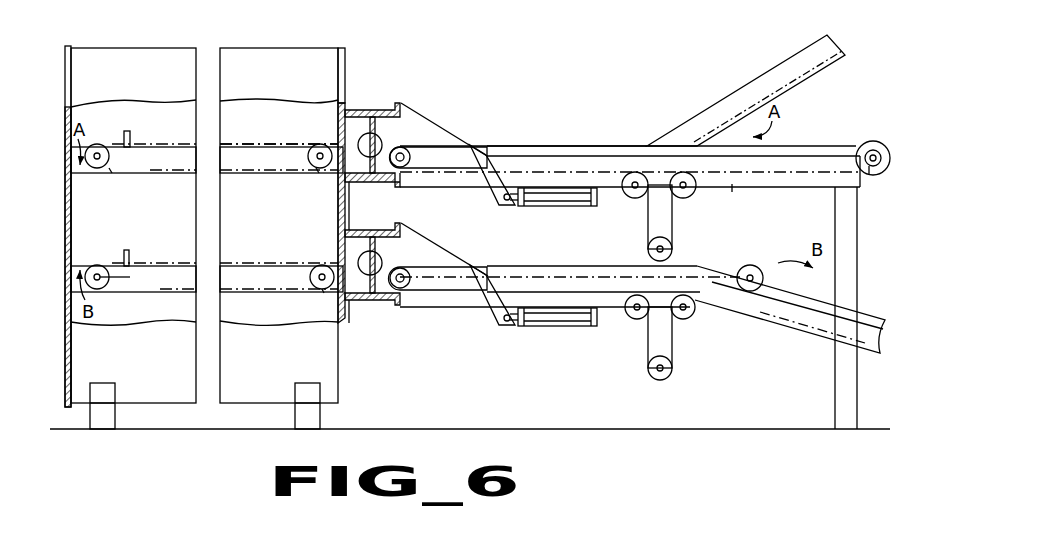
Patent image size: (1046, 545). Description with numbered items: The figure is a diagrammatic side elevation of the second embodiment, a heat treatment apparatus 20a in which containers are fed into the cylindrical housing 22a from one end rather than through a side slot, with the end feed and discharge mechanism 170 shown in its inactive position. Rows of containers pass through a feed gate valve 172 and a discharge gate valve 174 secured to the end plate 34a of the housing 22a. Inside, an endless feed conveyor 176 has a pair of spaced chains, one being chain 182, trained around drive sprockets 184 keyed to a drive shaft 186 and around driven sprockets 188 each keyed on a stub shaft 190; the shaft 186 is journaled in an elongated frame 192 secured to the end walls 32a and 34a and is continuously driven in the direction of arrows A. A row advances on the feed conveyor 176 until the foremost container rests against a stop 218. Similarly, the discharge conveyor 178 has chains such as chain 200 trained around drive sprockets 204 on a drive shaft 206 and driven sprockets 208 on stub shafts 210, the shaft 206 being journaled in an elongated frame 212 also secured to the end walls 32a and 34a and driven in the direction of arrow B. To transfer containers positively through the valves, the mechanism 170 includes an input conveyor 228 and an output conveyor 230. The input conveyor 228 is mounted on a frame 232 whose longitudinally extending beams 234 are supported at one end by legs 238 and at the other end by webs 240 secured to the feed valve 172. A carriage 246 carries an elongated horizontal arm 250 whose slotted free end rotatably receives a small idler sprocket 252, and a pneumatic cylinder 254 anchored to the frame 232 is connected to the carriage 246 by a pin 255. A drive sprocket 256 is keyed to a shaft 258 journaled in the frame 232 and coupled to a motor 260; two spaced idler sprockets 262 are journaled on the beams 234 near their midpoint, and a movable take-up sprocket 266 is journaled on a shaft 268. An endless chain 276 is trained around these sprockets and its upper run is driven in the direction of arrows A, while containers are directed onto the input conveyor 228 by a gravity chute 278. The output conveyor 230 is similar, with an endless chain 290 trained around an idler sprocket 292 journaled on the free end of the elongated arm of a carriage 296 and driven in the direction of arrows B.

The heat treatment apparatus 20a is at (327, 47).
The cylindrical housing 22a is at (227, 50).
The end wall 32a is at (71, 70).
The end plate 34a is at (346, 58).
The end feed and discharge mechanism 170 is at (615, 134).
The feed gate valve 172 is at (359, 109).
The discharge gate valve 174 is at (373, 218).
The endless feed conveyor 176 is at (240, 145).
The discharge conveyor 178 is at (226, 262).
The endless chain 182 is at (155, 176).
The drive sprockets 184 is at (113, 173).
The drive shaft 186 is at (98, 151).
The driven sprockets 188 is at (319, 150).
The stub shaft 190 is at (318, 171).
The elongated frame 192 is at (251, 172).
The endless chain 200 is at (232, 301).
The drive sprockets 204 is at (101, 266).
The drive shaft 206 is at (137, 278).
The driven sprockets 208 is at (312, 269).
The stub shaft 210 is at (323, 288).
The elongated frame 212 is at (174, 297).
The stop 218 is at (129, 134).
The input conveyor 228 is at (521, 136).
The output conveyor 230 is at (702, 265).
The frame 232 is at (815, 190).
The longitudinally extending beams 234 is at (717, 200).
The legs 238 is at (836, 376).
The webs 240 is at (424, 101).
The carriage 246 is at (488, 150).
The elongated horizontal arm 250 is at (440, 150).
The idler sprocket 252 is at (398, 196).
The pneumatic cylinder 254 is at (579, 209).
The pin 255 is at (504, 197).
The drive sprocket 256 is at (857, 147).
The shaft 258 is at (870, 178).
The motor 260 is at (870, 140).
The idler sprockets 262 is at (691, 175).
The take-up sprocket 266 is at (668, 246).
The shaft 268 is at (654, 249).
The endless chain 276 is at (546, 144).
The gravity chute 278 is at (782, 68).
The endless chain 290 is at (553, 260).
The idler sprocket 292 is at (396, 294).
The carriage 296 is at (441, 267).